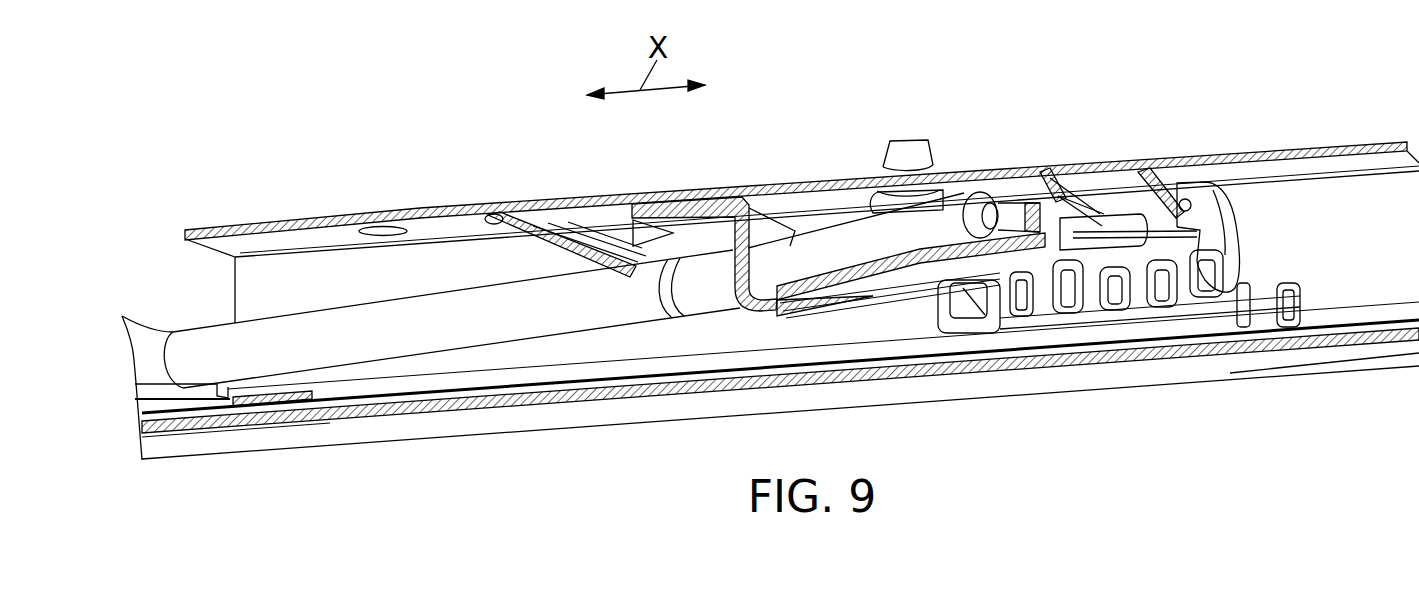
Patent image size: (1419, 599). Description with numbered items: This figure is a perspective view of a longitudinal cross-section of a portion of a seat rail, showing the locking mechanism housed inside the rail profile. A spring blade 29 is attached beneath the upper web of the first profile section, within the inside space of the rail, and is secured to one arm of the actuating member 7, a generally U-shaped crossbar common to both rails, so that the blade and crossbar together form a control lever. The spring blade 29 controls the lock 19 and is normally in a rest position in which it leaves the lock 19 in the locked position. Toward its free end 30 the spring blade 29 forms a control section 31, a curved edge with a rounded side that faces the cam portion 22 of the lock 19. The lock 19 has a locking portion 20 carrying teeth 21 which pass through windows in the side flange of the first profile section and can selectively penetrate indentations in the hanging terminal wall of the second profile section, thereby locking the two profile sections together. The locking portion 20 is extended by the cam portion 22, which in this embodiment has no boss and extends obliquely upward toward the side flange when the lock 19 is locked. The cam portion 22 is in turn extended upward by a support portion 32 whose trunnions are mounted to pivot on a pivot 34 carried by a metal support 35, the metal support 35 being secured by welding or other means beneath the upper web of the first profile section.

The actuating member 7 is at (265, 340).
The lock 19 is at (1275, 236).
The locking portion 20 is at (1228, 290).
The teeth 21 is at (1125, 300).
The cam portion 22 is at (1227, 252).
The spring blade 29 is at (790, 190).
The free end 30 is at (1015, 250).
The control section 31 is at (1060, 172).
The support portion 32 is at (1217, 210).
The pivot 34 is at (1126, 205).
The metal support 35 is at (1152, 172).